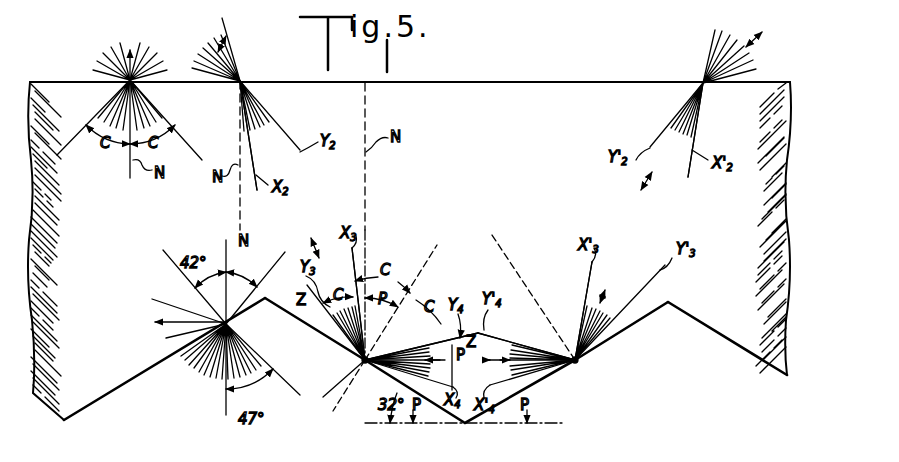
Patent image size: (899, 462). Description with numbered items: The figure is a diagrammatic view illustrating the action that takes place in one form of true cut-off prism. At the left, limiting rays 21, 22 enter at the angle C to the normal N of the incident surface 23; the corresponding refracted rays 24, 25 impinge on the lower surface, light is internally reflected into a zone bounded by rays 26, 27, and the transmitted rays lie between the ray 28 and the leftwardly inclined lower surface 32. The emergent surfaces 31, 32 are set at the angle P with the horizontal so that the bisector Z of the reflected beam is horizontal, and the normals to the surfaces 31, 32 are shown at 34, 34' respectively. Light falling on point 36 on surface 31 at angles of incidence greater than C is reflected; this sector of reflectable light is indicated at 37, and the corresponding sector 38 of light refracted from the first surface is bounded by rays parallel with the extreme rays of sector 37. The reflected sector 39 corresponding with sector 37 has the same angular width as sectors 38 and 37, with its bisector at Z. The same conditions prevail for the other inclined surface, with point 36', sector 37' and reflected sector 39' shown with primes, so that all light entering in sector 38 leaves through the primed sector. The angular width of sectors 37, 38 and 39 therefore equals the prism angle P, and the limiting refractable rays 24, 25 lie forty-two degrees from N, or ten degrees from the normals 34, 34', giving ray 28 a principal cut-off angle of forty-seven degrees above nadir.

The limiting ray 21 is at (90, 118).
The limiting ray 22 is at (175, 125).
The incident surface 23 is at (505, 82).
The limiting refractable ray 24 is at (278, 260).
The limiting refractable ray 25 is at (168, 258).
The ray bounding the internally reflected zone 26 is at (178, 300).
The ray bounding the internally reflected zone 27 is at (172, 338).
The ray 28 is at (262, 358).
The emergent surface 31 is at (305, 322).
The emergent surface 32 is at (120, 388).
The normal to surface 31 34 is at (412, 302).
The normal to surface 32 34' is at (533, 297).
The point on surface 31 36 is at (345, 365).
The point on surface 32 36' is at (591, 373).
The sector of reflectable light 37 is at (345, 304).
The sector of reflectable light 37' is at (605, 311).
The sector of refracted light 38 is at (471, 135).
The reflected sector 39 is at (421, 340).
The reflected sector 39' is at (526, 334).